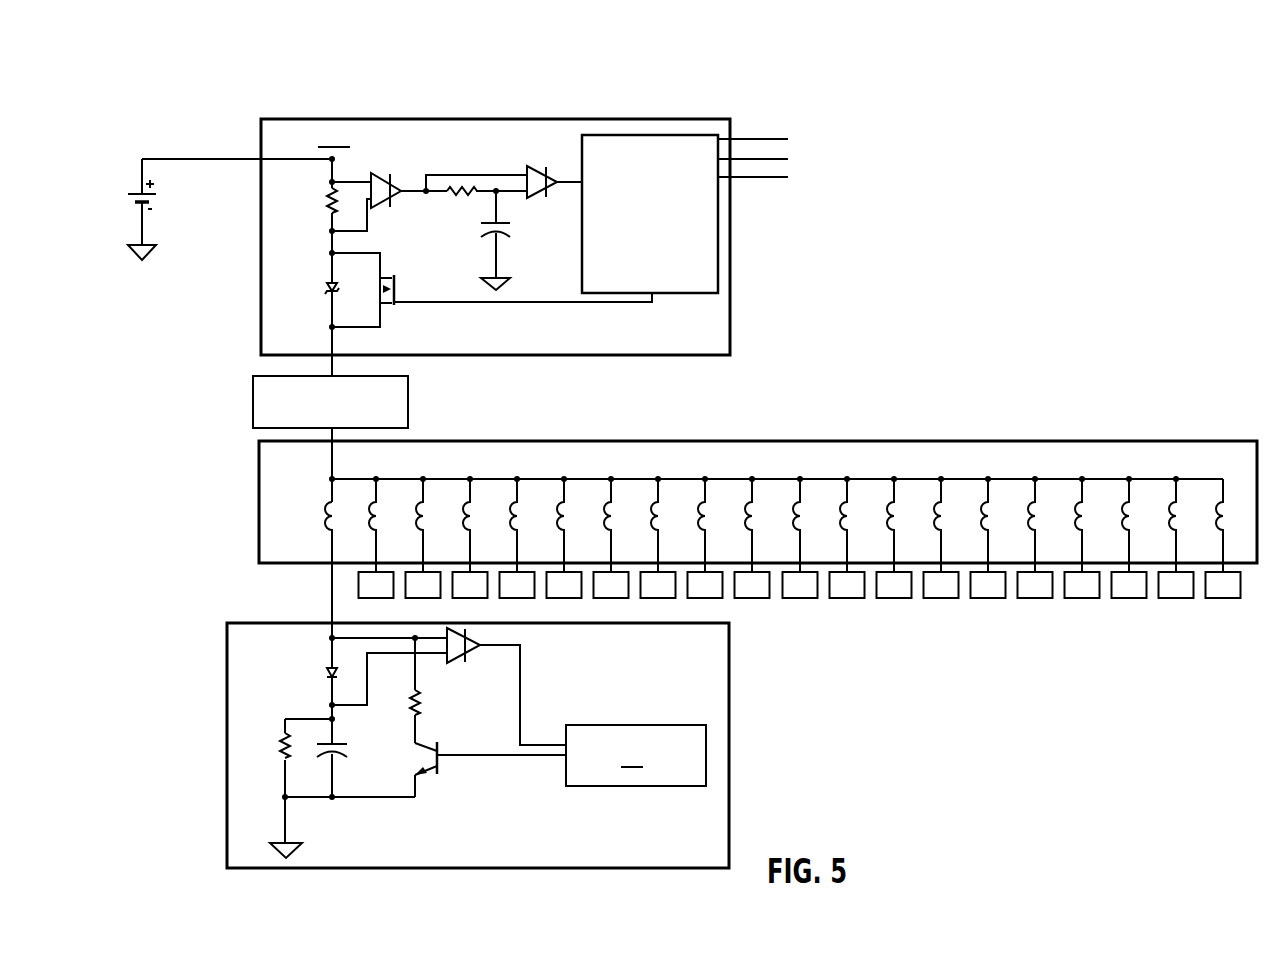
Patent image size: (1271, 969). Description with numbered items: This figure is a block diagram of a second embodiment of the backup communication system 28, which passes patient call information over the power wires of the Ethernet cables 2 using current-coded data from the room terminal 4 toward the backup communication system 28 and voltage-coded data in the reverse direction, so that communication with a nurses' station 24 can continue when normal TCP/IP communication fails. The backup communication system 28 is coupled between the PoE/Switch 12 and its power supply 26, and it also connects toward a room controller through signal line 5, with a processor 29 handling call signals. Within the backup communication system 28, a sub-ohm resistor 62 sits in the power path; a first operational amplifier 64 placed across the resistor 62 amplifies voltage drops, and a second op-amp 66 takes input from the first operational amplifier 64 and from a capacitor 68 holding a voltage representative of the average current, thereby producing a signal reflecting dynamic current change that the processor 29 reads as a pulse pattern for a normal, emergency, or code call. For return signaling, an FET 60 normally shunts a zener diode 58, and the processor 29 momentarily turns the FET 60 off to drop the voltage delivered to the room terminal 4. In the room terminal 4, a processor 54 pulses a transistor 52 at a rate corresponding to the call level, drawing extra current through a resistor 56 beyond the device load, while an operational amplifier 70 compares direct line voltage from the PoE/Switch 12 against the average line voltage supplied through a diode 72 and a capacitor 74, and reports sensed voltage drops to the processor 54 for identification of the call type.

The Ethernet cable 2 is at (318, 585).
The room terminal 4 is at (1032, 603).
The signal line 5 is at (765, 139).
The PoE/Switch 12 is at (410, 402).
The nurses' station 24 is at (396, 704).
The power supply 26 is at (137, 168).
The backup communication system 28 is at (732, 118).
The processor 29 is at (725, 248).
The transistor 52 is at (442, 780).
The processor 54 is at (636, 755).
The resistor 56 is at (442, 690).
The zener diode 58 is at (318, 293).
The FET 60 is at (405, 312).
The resistor 62 is at (320, 207).
The first operational amplifier 64 is at (403, 173).
The second op-amp 66 is at (542, 160).
The capacitor 68 is at (520, 252).
The operational amplifier 70 is at (485, 653).
The diode 72 is at (320, 678).
The capacitor 74 is at (357, 767).